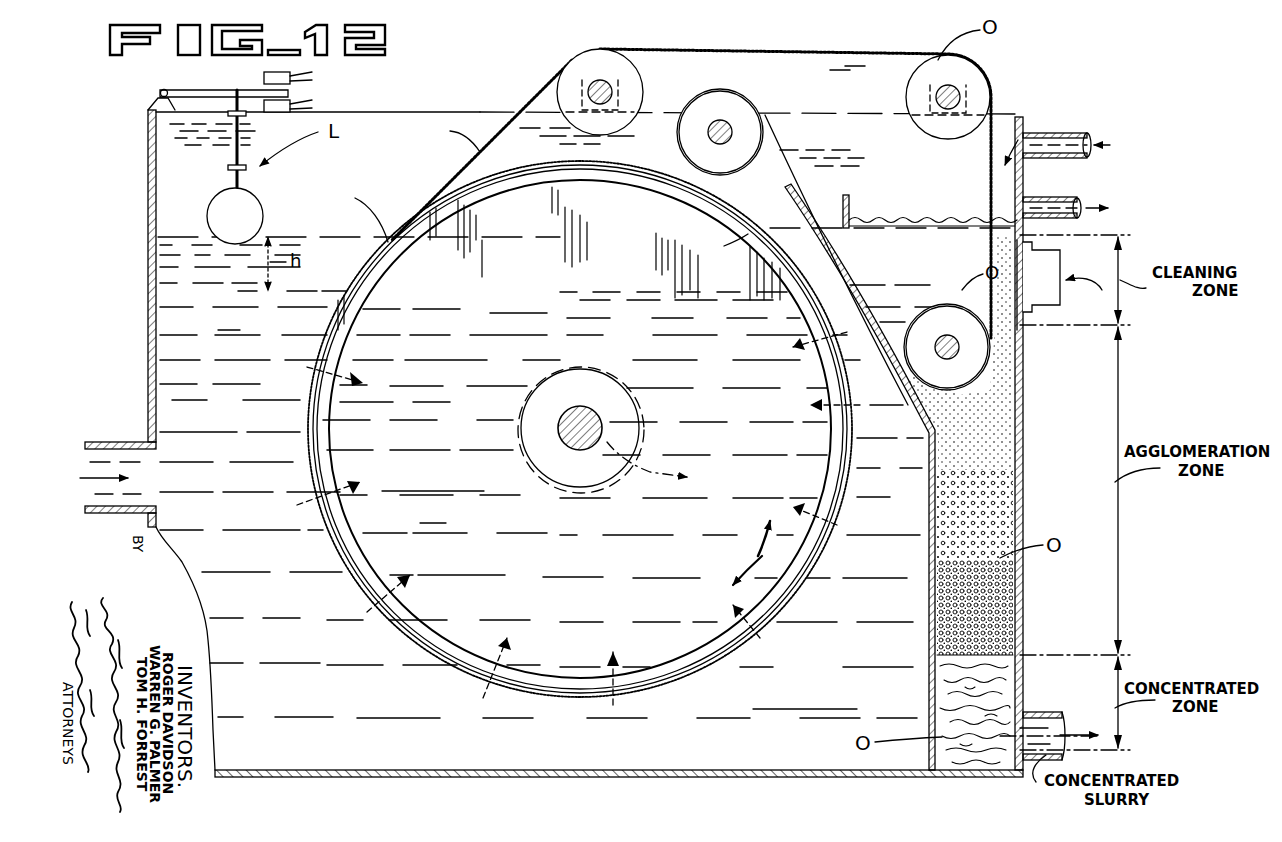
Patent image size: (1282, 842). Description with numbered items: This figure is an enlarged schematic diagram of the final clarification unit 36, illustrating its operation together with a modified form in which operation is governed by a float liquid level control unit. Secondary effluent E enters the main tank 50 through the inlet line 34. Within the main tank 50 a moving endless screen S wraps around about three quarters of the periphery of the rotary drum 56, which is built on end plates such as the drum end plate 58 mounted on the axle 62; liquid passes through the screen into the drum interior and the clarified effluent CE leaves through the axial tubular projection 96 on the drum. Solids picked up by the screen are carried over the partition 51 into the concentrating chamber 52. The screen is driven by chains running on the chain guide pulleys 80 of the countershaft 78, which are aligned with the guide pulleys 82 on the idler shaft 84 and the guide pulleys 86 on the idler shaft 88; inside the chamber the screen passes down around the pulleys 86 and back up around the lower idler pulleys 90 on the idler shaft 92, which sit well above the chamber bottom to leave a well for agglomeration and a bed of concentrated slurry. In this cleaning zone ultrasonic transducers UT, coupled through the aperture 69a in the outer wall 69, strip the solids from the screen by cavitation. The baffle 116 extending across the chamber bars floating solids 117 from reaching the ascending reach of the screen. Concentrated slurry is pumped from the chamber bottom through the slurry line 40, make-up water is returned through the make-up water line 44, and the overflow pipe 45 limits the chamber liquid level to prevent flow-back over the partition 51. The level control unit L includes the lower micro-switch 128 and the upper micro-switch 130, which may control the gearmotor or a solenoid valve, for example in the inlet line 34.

The inlet line 34 is at (104, 441).
The clarification unit 36 is at (1130, 63).
The slurry line 40 is at (1038, 714).
The make-up water line 44 is at (1066, 132).
The overflow pipe 45 is at (1055, 197).
The main tank 50 is at (147, 144).
The partition 51 is at (930, 474).
The concentrating chamber 52 is at (978, 432).
The rotary drum 56 is at (456, 188).
The drum end plate 58 is at (636, 228).
The axle 62 is at (568, 420).
The outer wall 69 is at (1020, 388).
The aperture 69a is at (1025, 254).
The countershaft 78 is at (712, 138).
The chain guide pulleys 80 is at (690, 130).
The guide pulleys 82 is at (594, 84).
The idler shaft 84 is at (560, 74).
The guide pulleys 86 is at (975, 72).
The idler shaft 88 is at (962, 95).
The idler pulleys 90 is at (986, 348).
The idler shaft 92 is at (955, 352).
The tubular projection 96 is at (546, 484).
The baffle 116 is at (864, 214).
The floating solids 117 is at (924, 218).
The lower micro-switch 128 is at (293, 108).
The upper micro-switch 130 is at (269, 75).